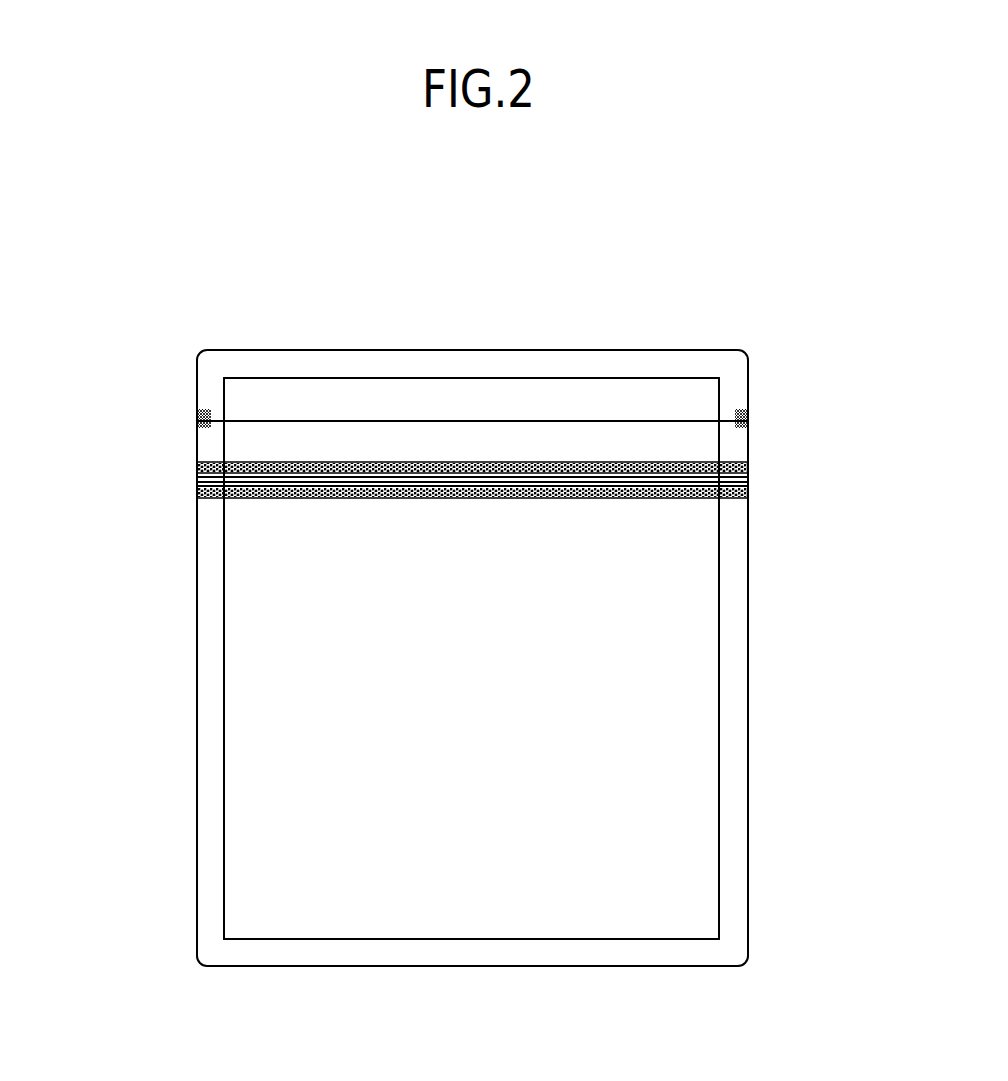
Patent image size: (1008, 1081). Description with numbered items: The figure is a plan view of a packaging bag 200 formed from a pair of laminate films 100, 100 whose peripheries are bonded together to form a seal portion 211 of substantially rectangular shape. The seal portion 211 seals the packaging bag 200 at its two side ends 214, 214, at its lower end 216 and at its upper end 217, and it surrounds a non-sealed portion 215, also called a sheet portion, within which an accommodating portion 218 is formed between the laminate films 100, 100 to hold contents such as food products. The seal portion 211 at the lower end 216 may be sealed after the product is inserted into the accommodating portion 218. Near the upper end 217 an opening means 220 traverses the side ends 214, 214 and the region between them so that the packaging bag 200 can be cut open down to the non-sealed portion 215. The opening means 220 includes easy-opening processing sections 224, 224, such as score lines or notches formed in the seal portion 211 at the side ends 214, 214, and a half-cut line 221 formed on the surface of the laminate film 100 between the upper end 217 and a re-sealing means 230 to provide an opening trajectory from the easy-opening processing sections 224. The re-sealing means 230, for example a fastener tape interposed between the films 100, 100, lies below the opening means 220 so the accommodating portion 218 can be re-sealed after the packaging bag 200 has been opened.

The laminate film 100 is at (686, 712).
The packaging bag 200 is at (130, 554).
The seal portion 211 is at (472, 658).
The side end 214 is at (206, 613).
The non-sealed portion 215 is at (243, 453).
The lower end 216 is at (583, 962).
The upper end 217 is at (584, 357).
The accommodating portion 218 is at (243, 707).
The opening means 220 is at (334, 293).
The half-cut line 221 is at (298, 420).
The easy-opening processing section 224 is at (208, 408).
The re-sealing means 230 is at (750, 481).